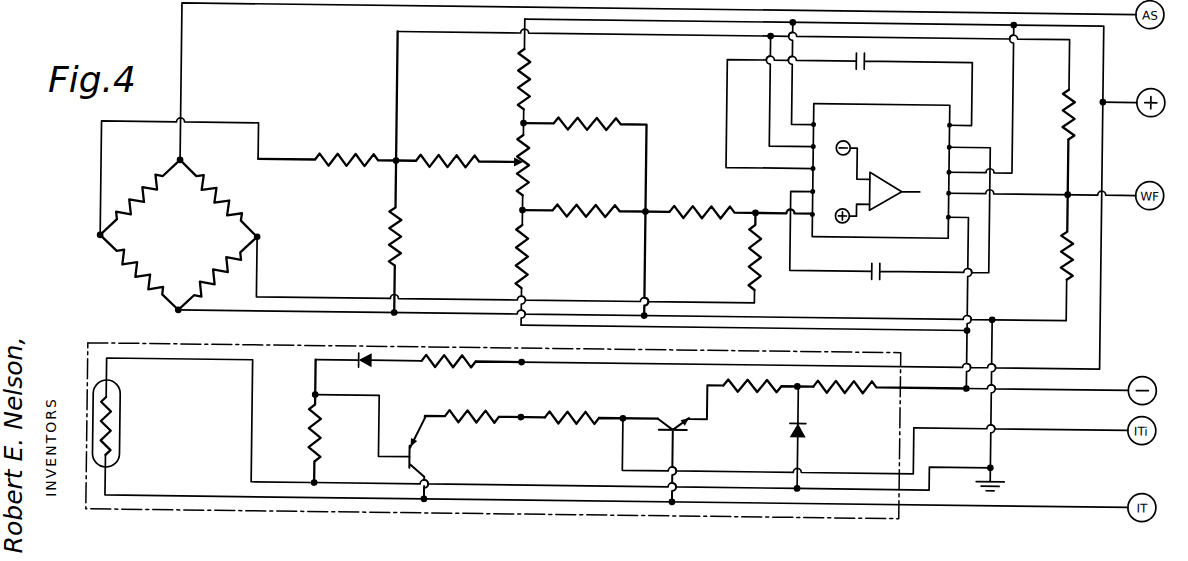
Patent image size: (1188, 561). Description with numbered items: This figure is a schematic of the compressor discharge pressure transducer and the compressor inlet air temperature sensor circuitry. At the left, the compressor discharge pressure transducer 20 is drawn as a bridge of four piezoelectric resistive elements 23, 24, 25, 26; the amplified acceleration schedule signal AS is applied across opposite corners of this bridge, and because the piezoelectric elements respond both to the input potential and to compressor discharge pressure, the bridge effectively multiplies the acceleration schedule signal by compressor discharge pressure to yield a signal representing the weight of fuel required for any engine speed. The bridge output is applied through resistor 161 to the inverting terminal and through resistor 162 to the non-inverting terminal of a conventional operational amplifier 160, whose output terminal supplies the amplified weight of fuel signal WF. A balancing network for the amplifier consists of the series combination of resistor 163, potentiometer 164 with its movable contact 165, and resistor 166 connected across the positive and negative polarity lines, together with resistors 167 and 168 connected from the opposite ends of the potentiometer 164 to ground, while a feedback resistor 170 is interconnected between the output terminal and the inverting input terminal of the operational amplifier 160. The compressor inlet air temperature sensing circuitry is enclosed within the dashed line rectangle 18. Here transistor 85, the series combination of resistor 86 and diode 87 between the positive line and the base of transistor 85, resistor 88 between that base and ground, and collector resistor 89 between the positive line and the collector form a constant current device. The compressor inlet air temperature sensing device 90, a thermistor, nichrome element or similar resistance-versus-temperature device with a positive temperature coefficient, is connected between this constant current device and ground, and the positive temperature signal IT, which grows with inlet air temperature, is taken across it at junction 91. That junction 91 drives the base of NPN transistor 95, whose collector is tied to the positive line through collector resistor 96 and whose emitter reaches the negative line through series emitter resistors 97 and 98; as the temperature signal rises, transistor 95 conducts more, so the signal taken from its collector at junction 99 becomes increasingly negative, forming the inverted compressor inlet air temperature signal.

The dashed line rectangle 18 is at (149, 348).
The compressor discharge pressure transducer 20 is at (192, 226).
The piezoelectric resistive element 23 is at (213, 184).
The piezoelectric resistive element 24 is at (210, 274).
The piezoelectric resistive element 25 is at (136, 277).
The piezoelectric resistive element 26 is at (145, 191).
The transistor 85 is at (417, 465).
The resistor 86 is at (440, 364).
The diode 87 is at (367, 368).
The resistor 88 is at (320, 433).
The collector resistor 89 is at (492, 421).
The compressor inlet air temperature sensing device 90 is at (114, 427).
The junction 91 is at (429, 503).
The NPN transistor 95 is at (675, 424).
The collector resistor 96 is at (577, 410).
The emitter resistor 97 is at (772, 389).
The emitter resistor 98 is at (845, 390).
The junction 99 is at (625, 418).
The operational amplifier 160 is at (887, 113).
The resistor 161 is at (341, 155).
The resistor 162 is at (748, 260).
The resistor 163 is at (528, 66).
The potentiometer 164 is at (530, 166).
The movable contact 165 is at (514, 161).
The resistor 166 is at (528, 273).
The resistor 167 is at (596, 123).
The resistor 168 is at (593, 210).
The feedback resistor 170 is at (1066, 94).